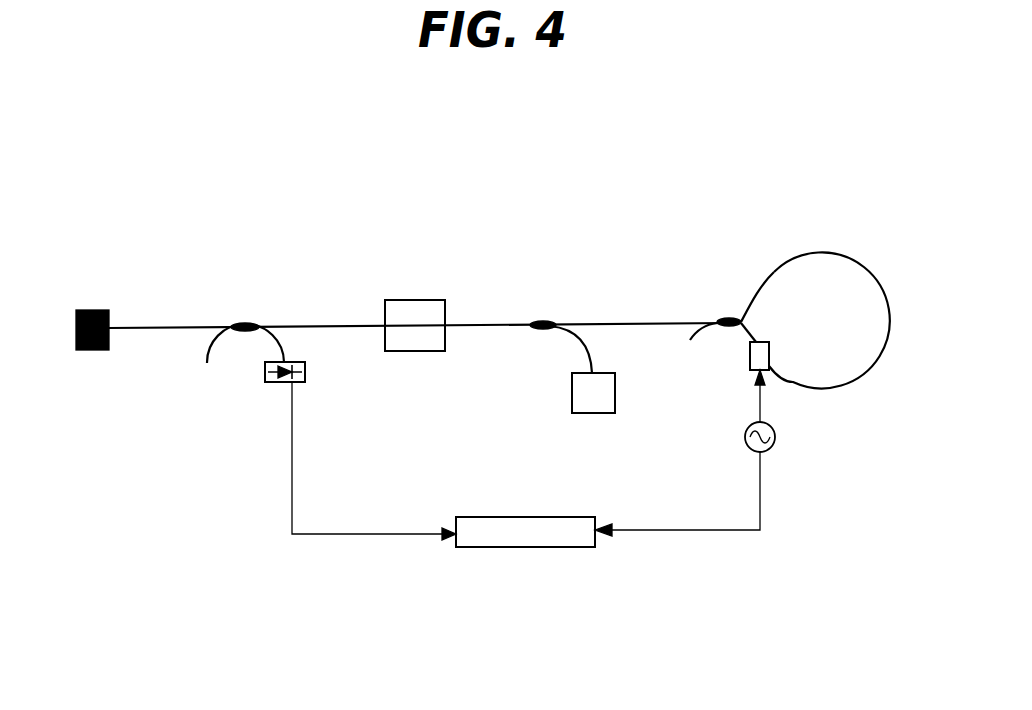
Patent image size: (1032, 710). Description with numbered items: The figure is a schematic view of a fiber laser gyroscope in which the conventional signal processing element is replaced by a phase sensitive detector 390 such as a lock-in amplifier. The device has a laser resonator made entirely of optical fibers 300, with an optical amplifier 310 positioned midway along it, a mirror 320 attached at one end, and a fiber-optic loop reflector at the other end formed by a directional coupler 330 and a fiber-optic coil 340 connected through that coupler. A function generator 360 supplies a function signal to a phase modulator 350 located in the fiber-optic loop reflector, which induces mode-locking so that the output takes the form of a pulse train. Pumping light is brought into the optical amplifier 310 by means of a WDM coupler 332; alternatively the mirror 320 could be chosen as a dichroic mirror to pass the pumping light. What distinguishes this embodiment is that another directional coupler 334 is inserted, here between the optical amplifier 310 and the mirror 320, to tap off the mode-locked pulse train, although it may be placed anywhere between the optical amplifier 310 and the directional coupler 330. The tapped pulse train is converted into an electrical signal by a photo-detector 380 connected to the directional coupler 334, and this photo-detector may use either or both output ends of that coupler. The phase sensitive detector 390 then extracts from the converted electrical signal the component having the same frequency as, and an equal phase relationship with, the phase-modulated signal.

The optical fibers 300 is at (157, 327).
The optical amplifier 310 is at (417, 300).
The mirror 320 is at (95, 352).
The directional coupler 330 is at (725, 318).
The WDM coupler 332 is at (540, 320).
The directional coupler 334 is at (243, 323).
The fiber-optic coil 340 is at (818, 252).
The phase modulator 350 is at (572, 385).
The function generator 360 is at (775, 443).
The photo-detector 380 is at (265, 370).
The phase sensitive detector 390 is at (453, 518).